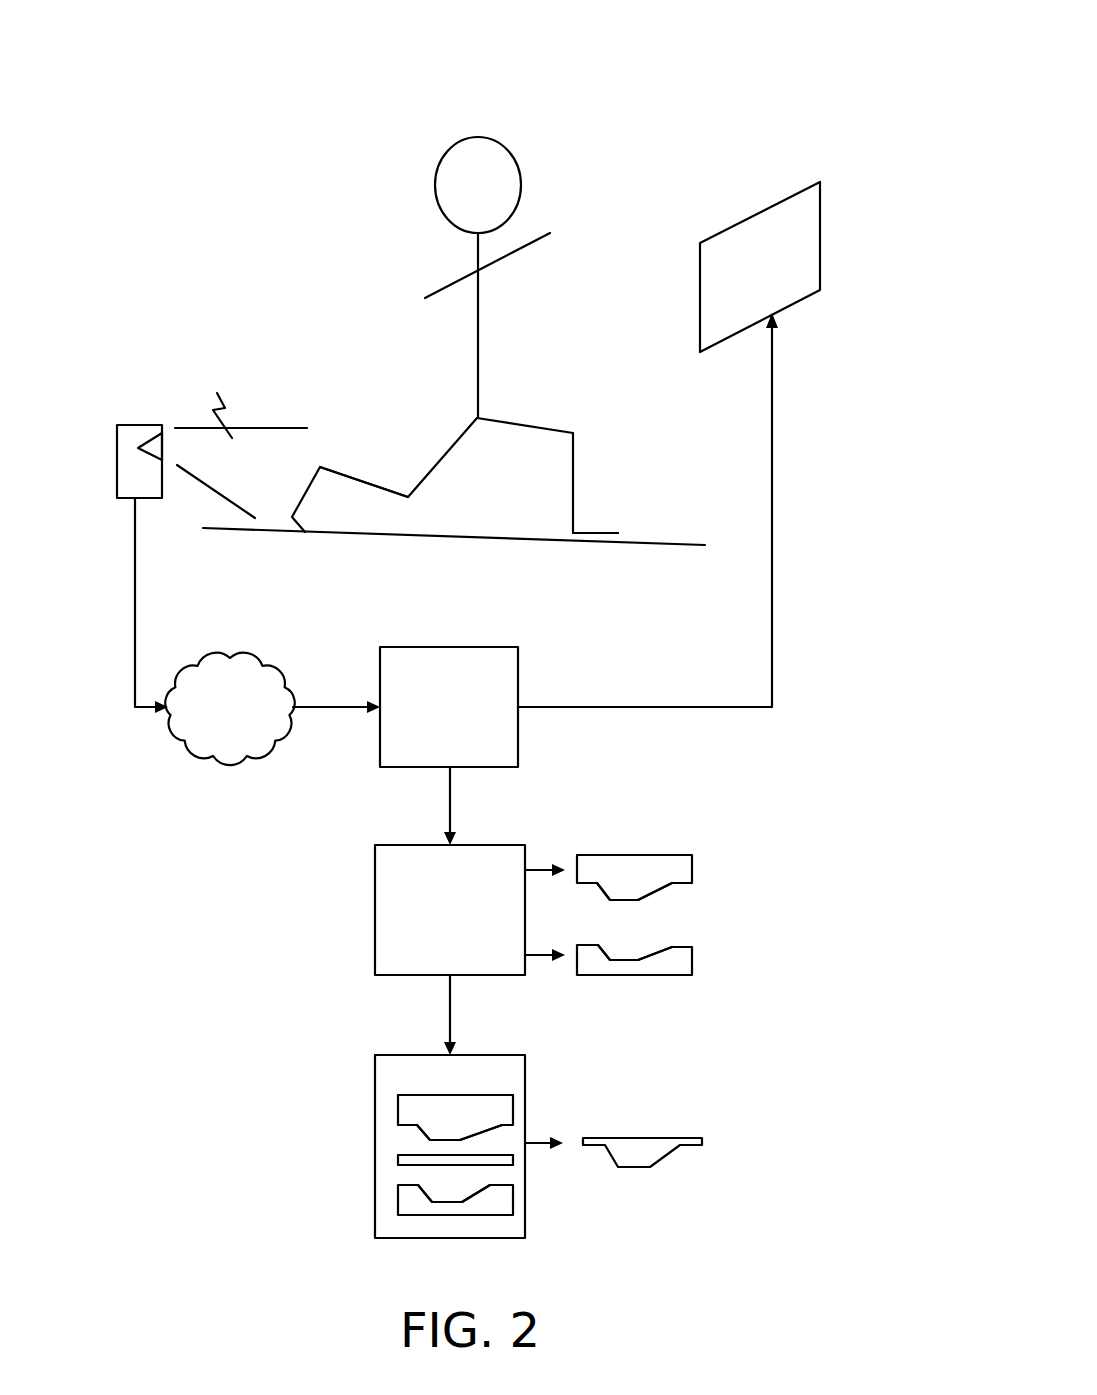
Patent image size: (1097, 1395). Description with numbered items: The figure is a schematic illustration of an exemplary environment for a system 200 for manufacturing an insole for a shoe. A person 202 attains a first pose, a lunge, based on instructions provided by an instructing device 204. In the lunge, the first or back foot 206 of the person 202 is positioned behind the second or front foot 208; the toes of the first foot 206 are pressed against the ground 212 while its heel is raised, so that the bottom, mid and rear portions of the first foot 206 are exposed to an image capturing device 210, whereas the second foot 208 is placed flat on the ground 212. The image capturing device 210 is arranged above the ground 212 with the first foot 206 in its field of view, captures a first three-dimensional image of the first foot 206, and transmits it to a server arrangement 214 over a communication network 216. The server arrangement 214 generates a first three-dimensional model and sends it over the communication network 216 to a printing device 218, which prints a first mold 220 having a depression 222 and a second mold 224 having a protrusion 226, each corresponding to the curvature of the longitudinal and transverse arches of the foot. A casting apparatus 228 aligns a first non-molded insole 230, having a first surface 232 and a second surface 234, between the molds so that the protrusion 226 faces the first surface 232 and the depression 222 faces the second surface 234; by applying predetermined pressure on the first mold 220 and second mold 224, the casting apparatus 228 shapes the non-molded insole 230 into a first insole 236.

The system 200 is at (768, 54).
The person 202 is at (457, 329).
The instructing device 204 is at (812, 267).
The first foot 206 is at (364, 443).
The second foot 208 is at (642, 505).
The image capturing device 210 is at (119, 429).
The ground 212 is at (433, 498).
The server arrangement 214 is at (449, 707).
The communication network 216 is at (229, 709).
The printing device 218 is at (450, 910).
The first mold 220 is at (545, 1102).
The depression 222 is at (603, 1090).
The second mold 224 is at (539, 980).
The protrusion 226 is at (599, 1011).
The casting apparatus 228 is at (450, 1146).
The first non-molded insole 230 is at (498, 1184).
The first surface 232 is at (404, 1144).
The second surface 234 is at (406, 1189).
The first insole 236 is at (675, 1131).